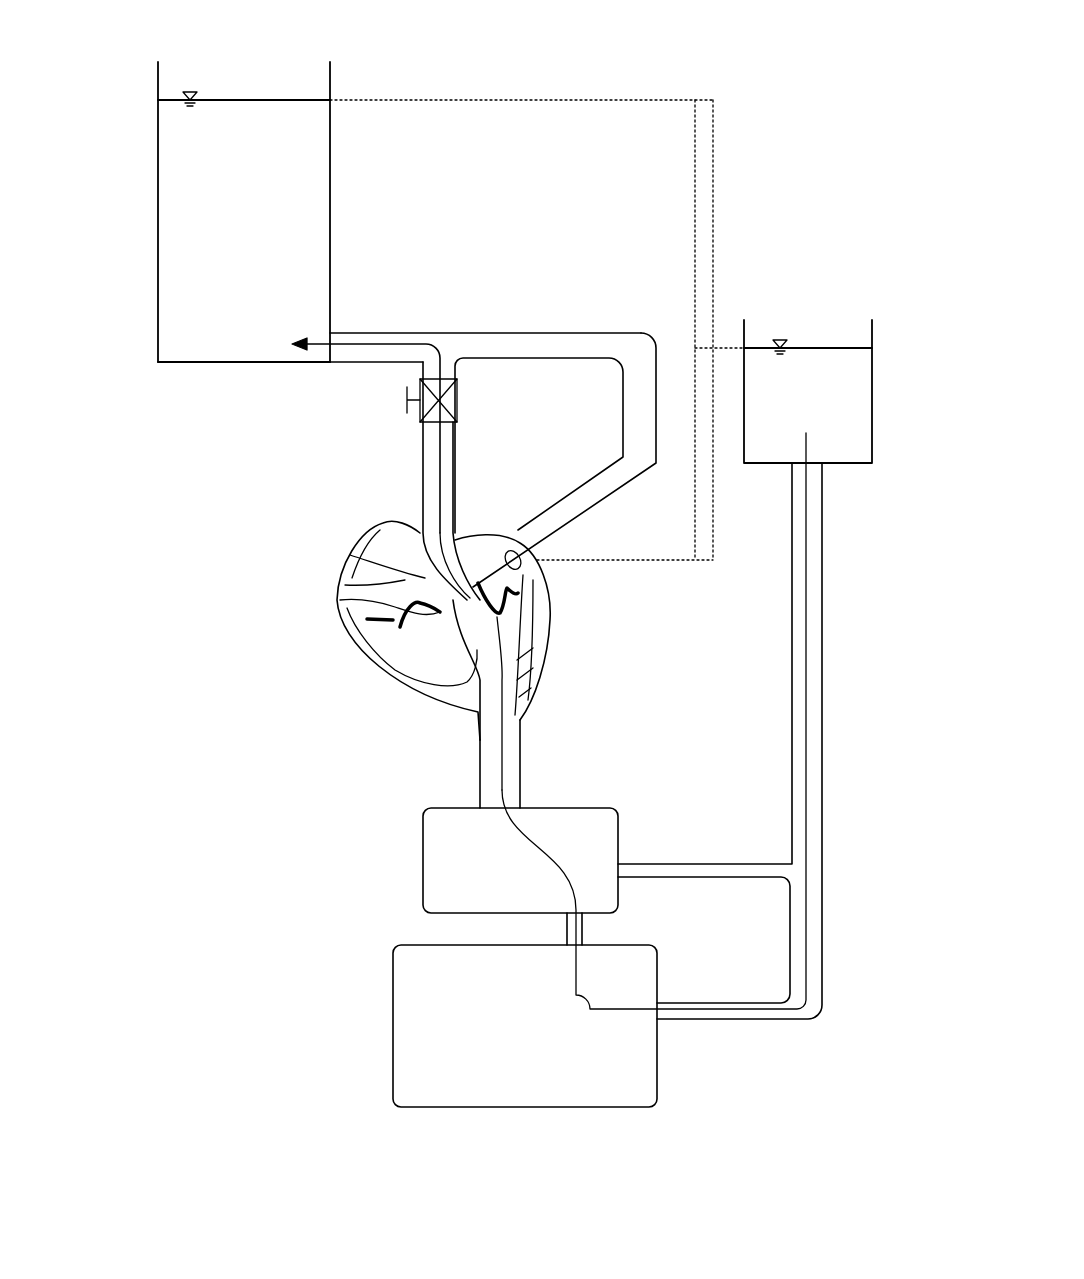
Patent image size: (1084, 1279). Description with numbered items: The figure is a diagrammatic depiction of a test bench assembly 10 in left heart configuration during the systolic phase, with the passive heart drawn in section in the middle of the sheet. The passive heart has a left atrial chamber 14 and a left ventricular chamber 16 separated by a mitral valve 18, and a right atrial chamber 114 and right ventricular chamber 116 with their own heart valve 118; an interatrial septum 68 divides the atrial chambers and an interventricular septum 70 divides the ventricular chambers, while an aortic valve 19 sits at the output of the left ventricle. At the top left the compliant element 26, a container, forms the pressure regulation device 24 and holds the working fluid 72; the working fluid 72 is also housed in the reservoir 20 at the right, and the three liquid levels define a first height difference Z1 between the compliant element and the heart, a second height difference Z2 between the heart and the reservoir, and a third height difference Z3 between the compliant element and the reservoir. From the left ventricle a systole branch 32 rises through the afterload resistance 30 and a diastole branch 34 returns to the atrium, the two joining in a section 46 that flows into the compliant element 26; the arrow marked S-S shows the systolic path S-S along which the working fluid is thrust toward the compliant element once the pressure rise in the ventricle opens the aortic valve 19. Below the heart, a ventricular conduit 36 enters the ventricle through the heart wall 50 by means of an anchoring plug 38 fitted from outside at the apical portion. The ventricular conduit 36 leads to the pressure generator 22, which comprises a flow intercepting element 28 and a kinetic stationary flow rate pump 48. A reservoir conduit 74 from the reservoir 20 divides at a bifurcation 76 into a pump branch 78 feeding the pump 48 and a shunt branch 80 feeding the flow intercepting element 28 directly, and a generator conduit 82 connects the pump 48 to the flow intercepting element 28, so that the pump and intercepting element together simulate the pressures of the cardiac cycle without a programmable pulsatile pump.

The test bench assembly 10 is at (262, 878).
The left atrial chamber 14 is at (430, 647).
The left ventricular chamber 16 is at (507, 637).
The mitral valve 18 is at (525, 613).
The aortic valve 19 is at (523, 548).
The reservoir 20 is at (850, 391).
The pressure generator 22 is at (485, 957).
The pressure regulation device 24 is at (245, 368).
The compliant element 26 is at (187, 219).
The flow intercepting element 28 is at (423, 868).
The afterload resistance 30 is at (418, 418).
The systole branch 32 is at (423, 478).
The diastole branch 34 is at (555, 333).
The ventricular conduit 36 is at (480, 780).
The anchoring plug 38 is at (490, 717).
The section 46 is at (352, 332).
The kinetic stationary flow rate pump 48 is at (430, 1028).
The heart wall 50 is at (517, 673).
The interatrial septum 68 is at (425, 582).
The interventricular septum 70 is at (445, 650).
The working fluid 72 is at (258, 112).
The reservoir conduit 74 is at (822, 586).
The bifurcation 76 is at (790, 866).
The pump branch 78 is at (823, 940).
The shunt branch 80 is at (676, 862).
The generator conduit 82 is at (587, 927).
The right atrial chamber 114 is at (368, 582).
The right ventricular chamber 116 is at (403, 637).
The heart valve 118 is at (392, 606).
The first height difference Z1 is at (692, 172).
The second height difference Z2 is at (714, 512).
The third height difference Z3 is at (716, 172).
The systolic path S-S is at (297, 348).